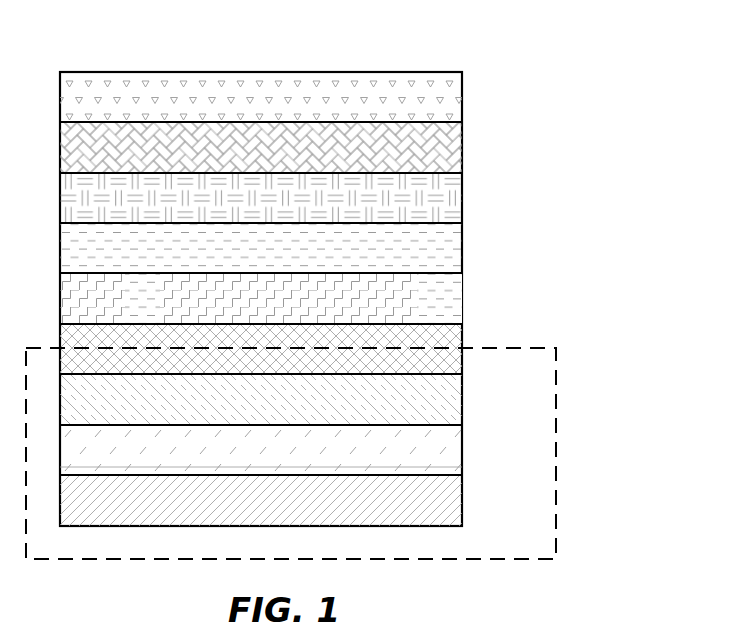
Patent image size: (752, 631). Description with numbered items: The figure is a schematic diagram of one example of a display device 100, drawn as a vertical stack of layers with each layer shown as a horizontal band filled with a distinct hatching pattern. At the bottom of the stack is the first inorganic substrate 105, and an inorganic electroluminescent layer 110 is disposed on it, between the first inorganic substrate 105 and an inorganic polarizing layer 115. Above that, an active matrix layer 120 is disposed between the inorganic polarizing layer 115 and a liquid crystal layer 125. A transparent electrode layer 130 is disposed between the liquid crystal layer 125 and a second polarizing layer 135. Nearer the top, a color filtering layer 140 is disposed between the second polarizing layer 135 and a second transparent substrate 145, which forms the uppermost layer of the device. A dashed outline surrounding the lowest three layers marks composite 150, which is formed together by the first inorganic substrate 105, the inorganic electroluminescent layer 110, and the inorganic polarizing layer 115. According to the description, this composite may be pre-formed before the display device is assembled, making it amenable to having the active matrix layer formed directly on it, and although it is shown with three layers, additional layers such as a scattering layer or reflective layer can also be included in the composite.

The display device 100 is at (604, 84).
The first inorganic substrate 105 is at (462, 495).
The inorganic electroluminescent layer 110 is at (462, 445).
The inorganic polarizing layer 115 is at (462, 395).
The active matrix layer 120 is at (462, 344).
The liquid crystal layer 125 is at (462, 294).
The transparent electrode layer 130 is at (462, 244).
The second polarizing layer 135 is at (462, 194).
The color filtering layer 140 is at (462, 143).
The second transparent substrate 145 is at (462, 93).
The composite 150 is at (556, 451).